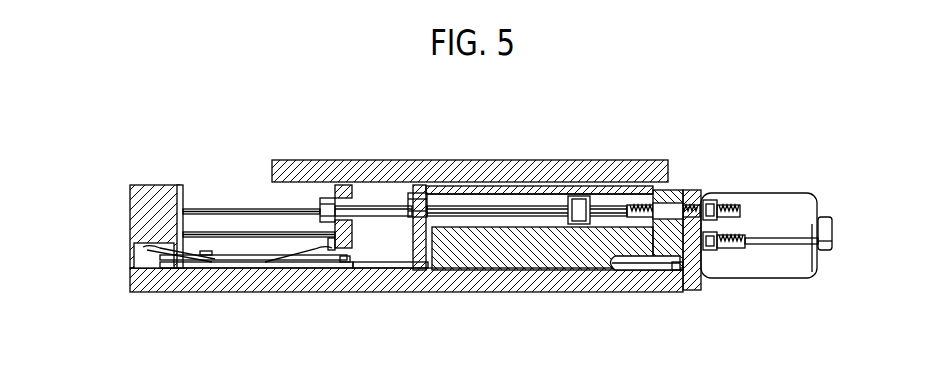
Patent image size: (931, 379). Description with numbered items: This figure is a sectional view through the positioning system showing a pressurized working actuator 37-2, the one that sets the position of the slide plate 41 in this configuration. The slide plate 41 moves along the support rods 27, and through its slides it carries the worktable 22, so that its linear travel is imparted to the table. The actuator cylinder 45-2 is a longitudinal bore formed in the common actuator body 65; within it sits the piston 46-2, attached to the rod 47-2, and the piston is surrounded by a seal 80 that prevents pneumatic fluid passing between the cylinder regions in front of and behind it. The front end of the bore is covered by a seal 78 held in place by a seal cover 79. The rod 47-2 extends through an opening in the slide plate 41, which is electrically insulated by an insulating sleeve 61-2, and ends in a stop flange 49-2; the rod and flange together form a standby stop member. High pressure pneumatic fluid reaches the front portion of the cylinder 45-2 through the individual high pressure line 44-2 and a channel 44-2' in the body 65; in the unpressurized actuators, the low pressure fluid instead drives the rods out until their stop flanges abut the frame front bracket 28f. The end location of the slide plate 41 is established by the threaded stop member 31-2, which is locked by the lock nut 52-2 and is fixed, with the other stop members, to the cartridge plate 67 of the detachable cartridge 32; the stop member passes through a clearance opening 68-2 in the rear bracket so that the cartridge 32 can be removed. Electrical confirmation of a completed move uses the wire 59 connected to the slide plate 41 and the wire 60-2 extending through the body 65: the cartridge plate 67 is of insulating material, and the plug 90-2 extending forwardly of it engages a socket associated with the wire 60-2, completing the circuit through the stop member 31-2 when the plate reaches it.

The worktable 22 is at (640, 170).
The support rods 27 is at (230, 218).
The frame front bracket 28f is at (145, 220).
The stop member 31-2 is at (724, 212).
The detachable cartridge 32 is at (772, 279).
The working actuator 37-2 is at (662, 190).
The slide plate 41 is at (352, 236).
The high pressure pneumatic fluid line 44-2 is at (262, 294).
The channel 44-2' is at (390, 303).
The actuator cylinder 45-2 is at (503, 205).
The piston 46-2 is at (605, 204).
The rod 47-2 is at (387, 200).
The stop flange 49-2 is at (323, 192).
The lock nut 52-2 is at (716, 194).
The electrical wire 59 is at (280, 270).
The wire 60-2 is at (630, 272).
The insulating sleeve 61-2 is at (362, 188).
The actuator body 65 is at (500, 262).
The cartridge plate 67 is at (688, 291).
The clearance opening 68-2 is at (692, 200).
The seal 78 is at (443, 192).
The seal cover 79 is at (413, 270).
The seal 80 is at (583, 226).
The electrical plug 90-2 is at (680, 282).